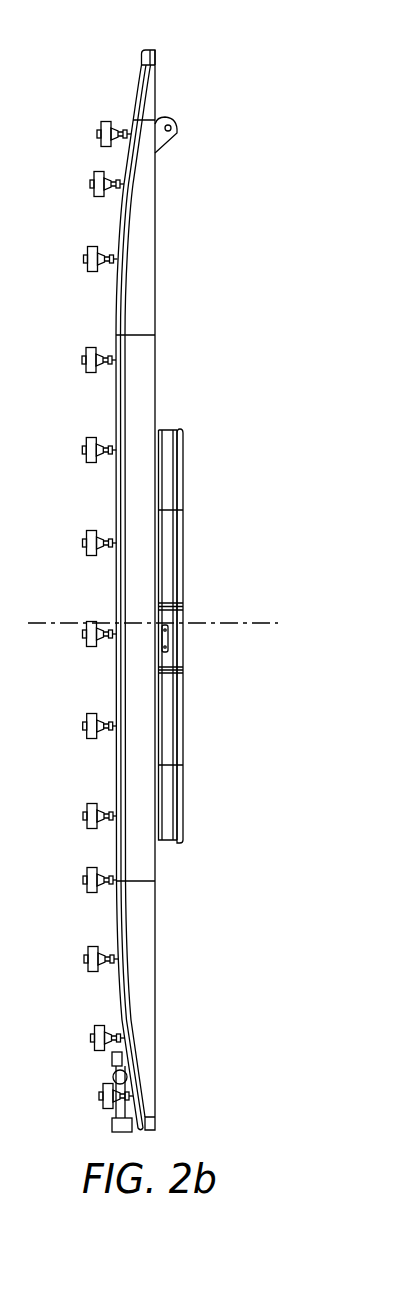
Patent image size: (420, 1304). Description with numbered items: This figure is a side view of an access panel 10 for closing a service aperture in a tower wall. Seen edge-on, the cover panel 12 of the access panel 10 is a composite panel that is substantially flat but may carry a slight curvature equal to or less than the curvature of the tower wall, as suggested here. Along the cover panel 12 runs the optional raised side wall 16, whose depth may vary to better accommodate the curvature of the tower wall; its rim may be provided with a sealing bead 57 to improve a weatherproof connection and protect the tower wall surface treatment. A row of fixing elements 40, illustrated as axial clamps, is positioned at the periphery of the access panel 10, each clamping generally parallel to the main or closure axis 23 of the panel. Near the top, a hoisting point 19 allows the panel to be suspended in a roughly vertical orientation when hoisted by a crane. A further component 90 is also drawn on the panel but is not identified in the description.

The access panel 10 is at (107, 72).
The cover panel 12 is at (150, 378).
The raised side wall 16 is at (135, 303).
The hoisting point 19 is at (178, 128).
The closure axis 23 is at (221, 628).
The fixing elements 40 is at (87, 716).
The sealing bead 57 is at (115, 411).
The slide bracket assembly 90 is at (181, 535).